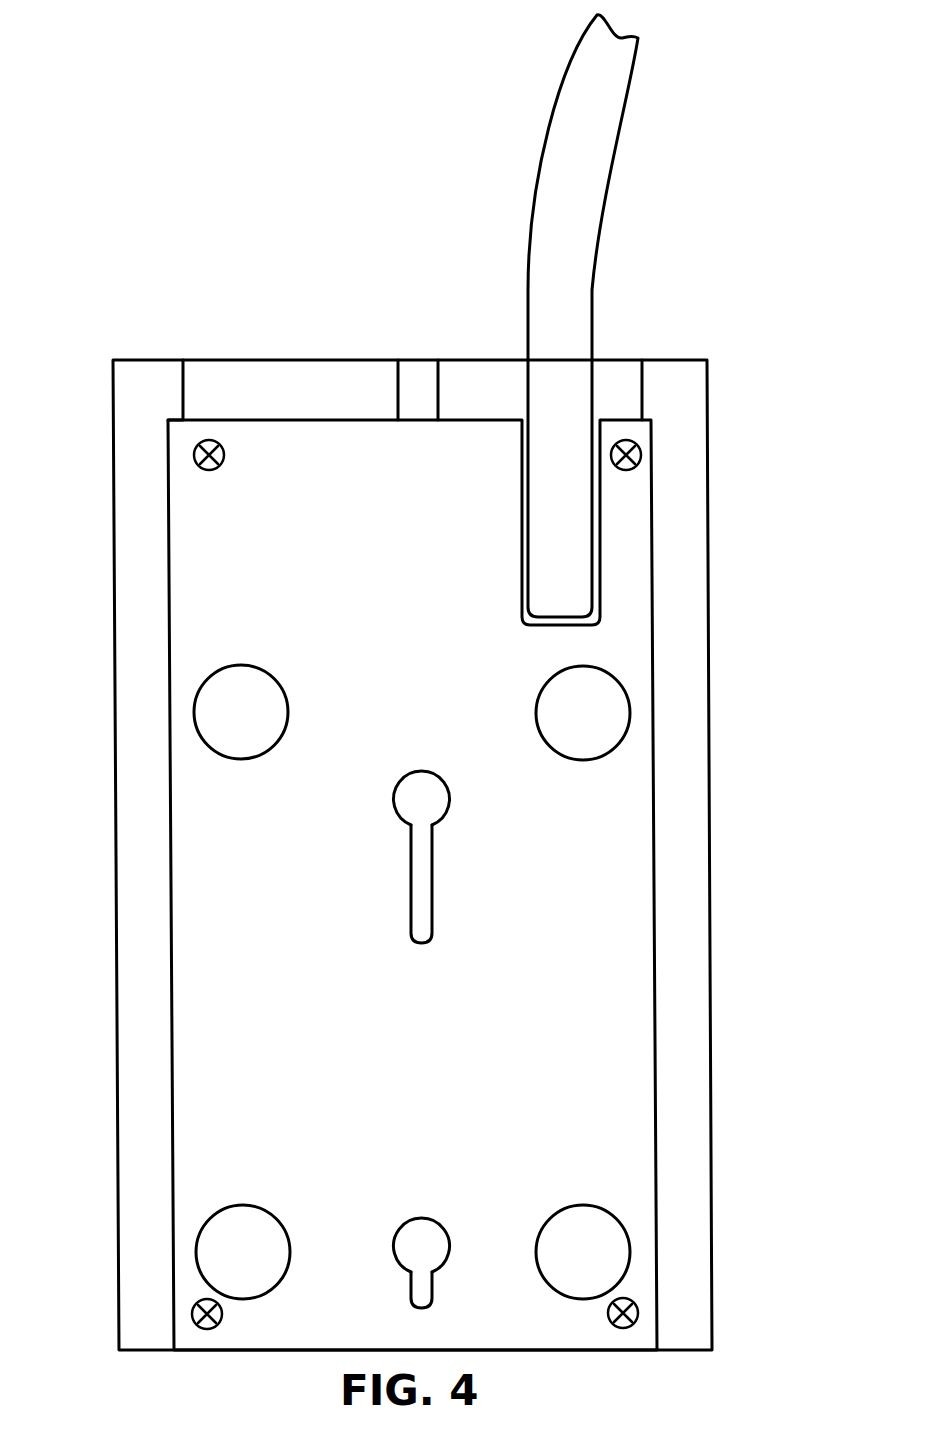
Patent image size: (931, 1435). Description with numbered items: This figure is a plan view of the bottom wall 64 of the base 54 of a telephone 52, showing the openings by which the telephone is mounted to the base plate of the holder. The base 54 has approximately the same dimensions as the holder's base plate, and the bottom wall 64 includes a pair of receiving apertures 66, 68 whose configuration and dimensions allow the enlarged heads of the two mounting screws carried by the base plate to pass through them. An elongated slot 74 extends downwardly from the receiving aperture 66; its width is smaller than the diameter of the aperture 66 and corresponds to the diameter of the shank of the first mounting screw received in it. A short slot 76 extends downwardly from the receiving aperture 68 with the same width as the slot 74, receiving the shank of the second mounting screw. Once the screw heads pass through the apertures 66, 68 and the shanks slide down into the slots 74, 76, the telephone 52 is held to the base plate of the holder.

The telephone 52 is at (712, 803).
The base 54 is at (293, 387).
The bottom wall 64 is at (623, 1010).
The receiving aperture 66 is at (426, 790).
The receiving aperture 68 is at (422, 1238).
The elongated slot 74 is at (420, 910).
The short slot 76 is at (420, 1290).